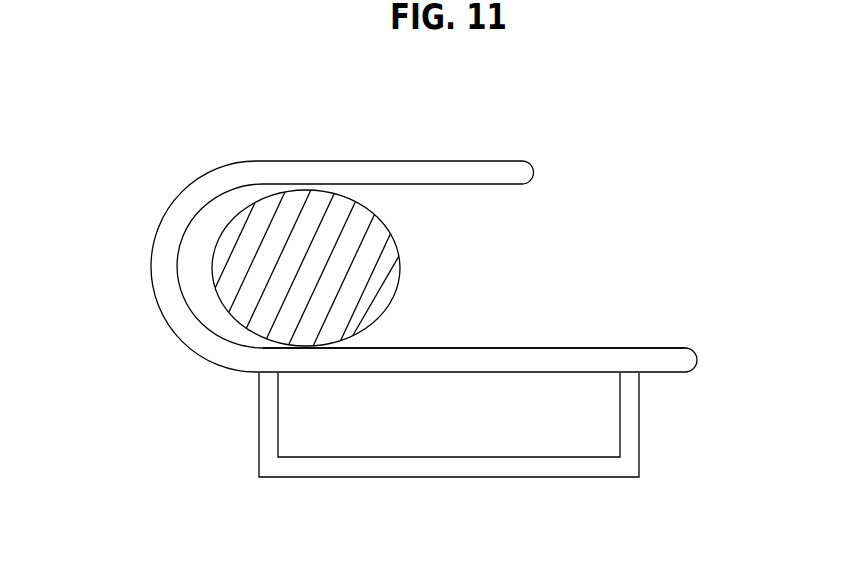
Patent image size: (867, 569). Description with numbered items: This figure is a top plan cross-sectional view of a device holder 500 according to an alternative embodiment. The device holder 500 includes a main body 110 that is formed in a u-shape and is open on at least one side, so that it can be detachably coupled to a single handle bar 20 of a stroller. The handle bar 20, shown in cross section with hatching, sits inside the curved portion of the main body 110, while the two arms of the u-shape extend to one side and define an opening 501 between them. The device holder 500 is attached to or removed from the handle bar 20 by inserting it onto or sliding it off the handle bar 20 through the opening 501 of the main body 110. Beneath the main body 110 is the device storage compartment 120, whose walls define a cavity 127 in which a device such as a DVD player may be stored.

The device holder 500 is at (125, 125).
The main body 110 is at (151, 270).
The opening 501 is at (560, 268).
The handle bar 20 is at (352, 197).
The device storage compartment 120 is at (649, 428).
The cavity 127 is at (438, 432).